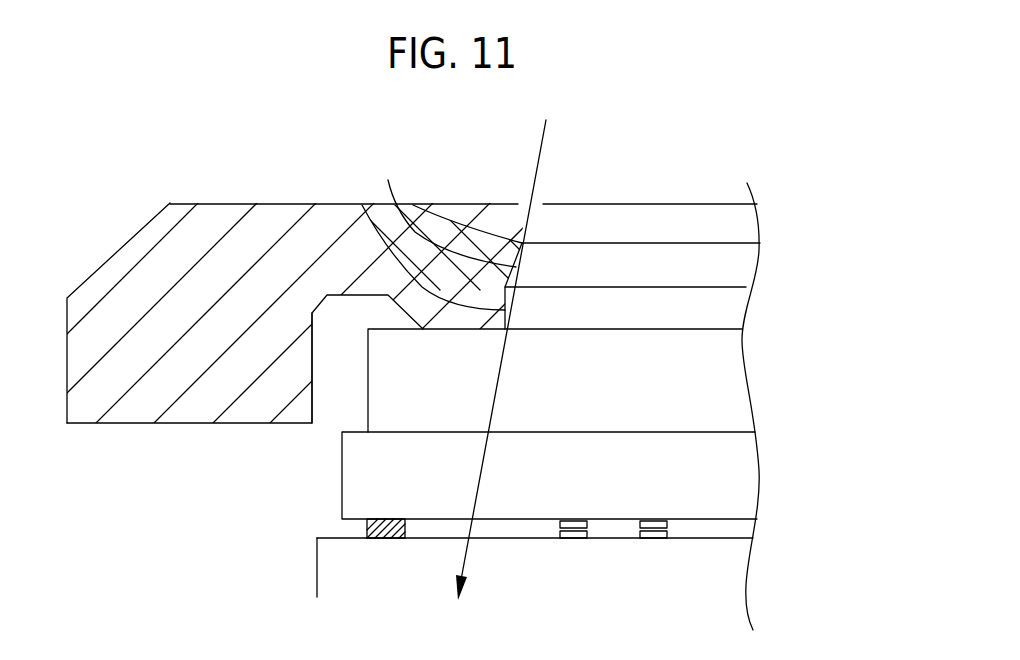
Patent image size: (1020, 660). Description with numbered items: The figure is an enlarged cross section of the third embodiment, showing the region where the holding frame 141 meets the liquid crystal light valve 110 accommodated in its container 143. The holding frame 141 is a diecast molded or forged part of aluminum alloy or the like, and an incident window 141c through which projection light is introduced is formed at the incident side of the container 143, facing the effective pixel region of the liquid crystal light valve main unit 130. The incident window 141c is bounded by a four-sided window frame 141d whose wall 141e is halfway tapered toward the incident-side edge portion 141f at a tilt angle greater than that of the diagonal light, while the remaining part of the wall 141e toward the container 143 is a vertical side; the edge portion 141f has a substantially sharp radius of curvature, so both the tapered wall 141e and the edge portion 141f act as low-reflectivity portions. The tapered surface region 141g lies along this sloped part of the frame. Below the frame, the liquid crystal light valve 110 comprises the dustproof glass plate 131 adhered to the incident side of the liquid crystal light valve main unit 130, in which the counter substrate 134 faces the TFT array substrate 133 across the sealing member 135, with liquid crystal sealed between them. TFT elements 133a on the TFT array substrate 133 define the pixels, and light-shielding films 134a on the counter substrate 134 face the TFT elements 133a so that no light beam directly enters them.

The liquid crystal light valve 110 is at (312, 505).
The liquid crystal light valve main unit 130 is at (846, 462).
The dustproof glass plate 131 is at (730, 383).
The TFT array substrate 133 is at (730, 580).
The TFT elements 133a is at (572, 538).
The counter substrate 134 is at (730, 487).
The light-shielding films 134a is at (577, 520).
The sealing member 135 is at (378, 538).
The holding frame 141 is at (103, 231).
The incident window 141c is at (673, 322).
The window frame 141d is at (617, 223).
The wall 141e is at (362, 205).
The edge portion 141f is at (707, 242).
The prism portion 141g is at (388, 180).
The container 143 is at (332, 390).